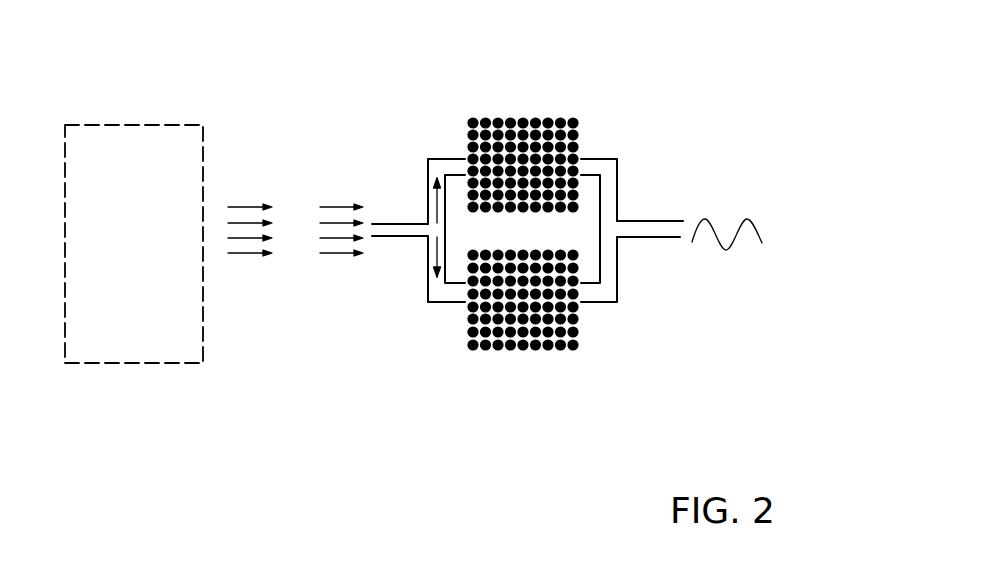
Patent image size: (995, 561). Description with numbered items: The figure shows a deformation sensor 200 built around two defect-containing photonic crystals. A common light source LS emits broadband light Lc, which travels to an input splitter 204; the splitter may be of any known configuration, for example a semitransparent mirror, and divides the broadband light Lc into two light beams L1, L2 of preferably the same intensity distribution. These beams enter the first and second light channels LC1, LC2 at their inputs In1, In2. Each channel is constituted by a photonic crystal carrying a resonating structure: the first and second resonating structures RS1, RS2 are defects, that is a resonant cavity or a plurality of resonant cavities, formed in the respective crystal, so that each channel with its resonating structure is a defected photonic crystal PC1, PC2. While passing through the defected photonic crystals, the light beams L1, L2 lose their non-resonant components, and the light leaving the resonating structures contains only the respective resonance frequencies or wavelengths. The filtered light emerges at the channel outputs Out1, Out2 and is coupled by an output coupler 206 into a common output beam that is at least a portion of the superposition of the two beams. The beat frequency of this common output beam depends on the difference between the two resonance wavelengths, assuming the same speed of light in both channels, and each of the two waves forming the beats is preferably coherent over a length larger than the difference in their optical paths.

The deformation sensor 200 is at (267, 75).
The common light source LS is at (130, 363).
The broadband light Lc is at (295, 230).
The input splitter 204 is at (383, 252).
The input of first channel In1 is at (413, 218).
The input of second channel In2 is at (412, 248).
The first light beam L1 is at (428, 198).
The second light beam L2 is at (428, 265).
The first resonating structure RS1 is at (524, 172).
The second resonating structure RS2 is at (525, 297).
The first light channel LC1 is at (577, 112).
The second light channel LC2 is at (582, 350).
The first defected photonic crystal PC1 is at (583, 125).
The second defected photonic crystal PC2 is at (588, 320).
The output of first channel Out1 is at (620, 216).
The output of second channel Out2 is at (628, 255).
The output coupler 206 is at (683, 221).